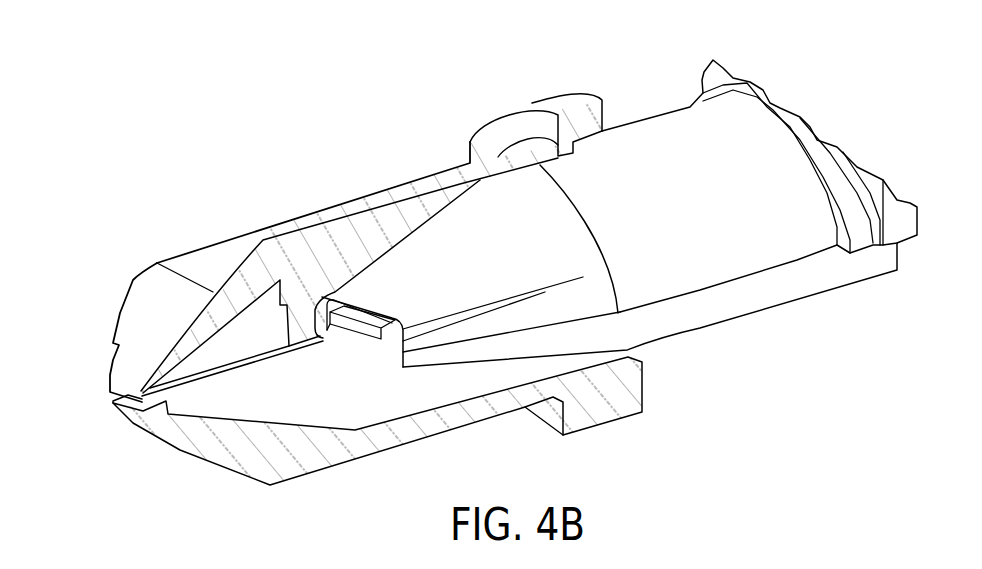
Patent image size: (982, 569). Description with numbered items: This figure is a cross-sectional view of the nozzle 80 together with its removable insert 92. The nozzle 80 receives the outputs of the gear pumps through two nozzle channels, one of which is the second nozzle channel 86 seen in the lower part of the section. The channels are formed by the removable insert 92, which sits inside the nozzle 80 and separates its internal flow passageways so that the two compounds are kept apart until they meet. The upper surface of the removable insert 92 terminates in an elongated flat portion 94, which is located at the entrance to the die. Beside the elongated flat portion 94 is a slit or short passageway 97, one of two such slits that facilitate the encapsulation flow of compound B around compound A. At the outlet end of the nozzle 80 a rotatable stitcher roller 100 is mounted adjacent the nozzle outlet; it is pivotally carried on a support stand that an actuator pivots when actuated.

The nozzle 80 is at (233, 253).
The second nozzle channel 86 is at (440, 400).
The removable insert 92 is at (662, 127).
The elongated flat portion 94 is at (365, 322).
The slit or short passageway 97 is at (332, 328).
The stitcher roller 100 is at (113, 402).